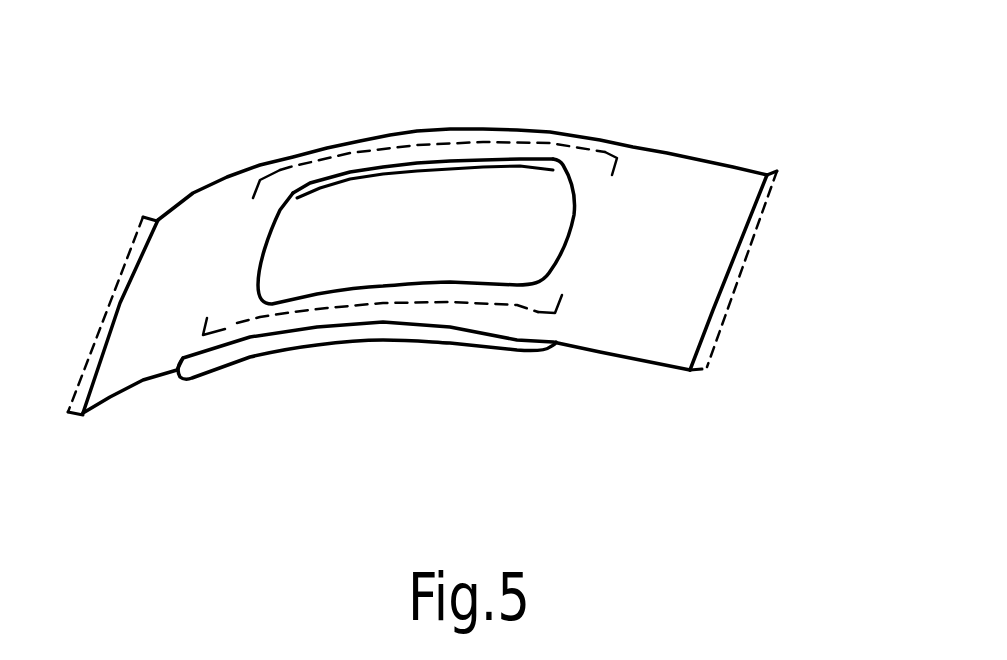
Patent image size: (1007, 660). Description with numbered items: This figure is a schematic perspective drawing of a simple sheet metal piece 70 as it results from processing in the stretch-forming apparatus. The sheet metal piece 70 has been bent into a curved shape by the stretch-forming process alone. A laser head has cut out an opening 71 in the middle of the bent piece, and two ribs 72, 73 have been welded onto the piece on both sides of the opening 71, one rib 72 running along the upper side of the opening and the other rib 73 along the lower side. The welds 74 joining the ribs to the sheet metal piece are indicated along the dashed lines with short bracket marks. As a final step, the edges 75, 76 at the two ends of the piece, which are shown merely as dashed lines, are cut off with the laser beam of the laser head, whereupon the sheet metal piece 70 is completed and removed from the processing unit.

The sheet metal piece 70 is at (710, 183).
The opening 71 is at (474, 231).
The rib 72 is at (420, 172).
The rib 73 is at (400, 334).
The welds 74 is at (240, 323).
The edge 75 is at (112, 303).
The edge 76 is at (747, 263).